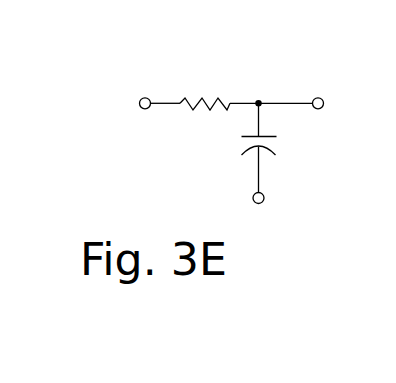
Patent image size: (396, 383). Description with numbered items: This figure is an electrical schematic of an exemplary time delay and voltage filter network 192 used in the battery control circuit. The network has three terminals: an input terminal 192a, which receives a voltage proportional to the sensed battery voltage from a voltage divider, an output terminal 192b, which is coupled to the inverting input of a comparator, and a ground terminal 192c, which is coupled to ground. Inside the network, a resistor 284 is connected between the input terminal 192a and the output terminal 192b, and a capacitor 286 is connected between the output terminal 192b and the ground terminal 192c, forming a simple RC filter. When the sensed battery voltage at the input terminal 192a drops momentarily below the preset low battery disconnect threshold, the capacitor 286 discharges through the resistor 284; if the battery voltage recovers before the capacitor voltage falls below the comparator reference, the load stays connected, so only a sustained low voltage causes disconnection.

The time delay and voltage filter network 192 is at (277, 34).
The input terminal 192a is at (143, 109).
The output terminal 192b is at (320, 98).
The ground terminal 192c is at (254, 202).
The resistor 284 is at (206, 102).
The capacitor 286 is at (272, 153).